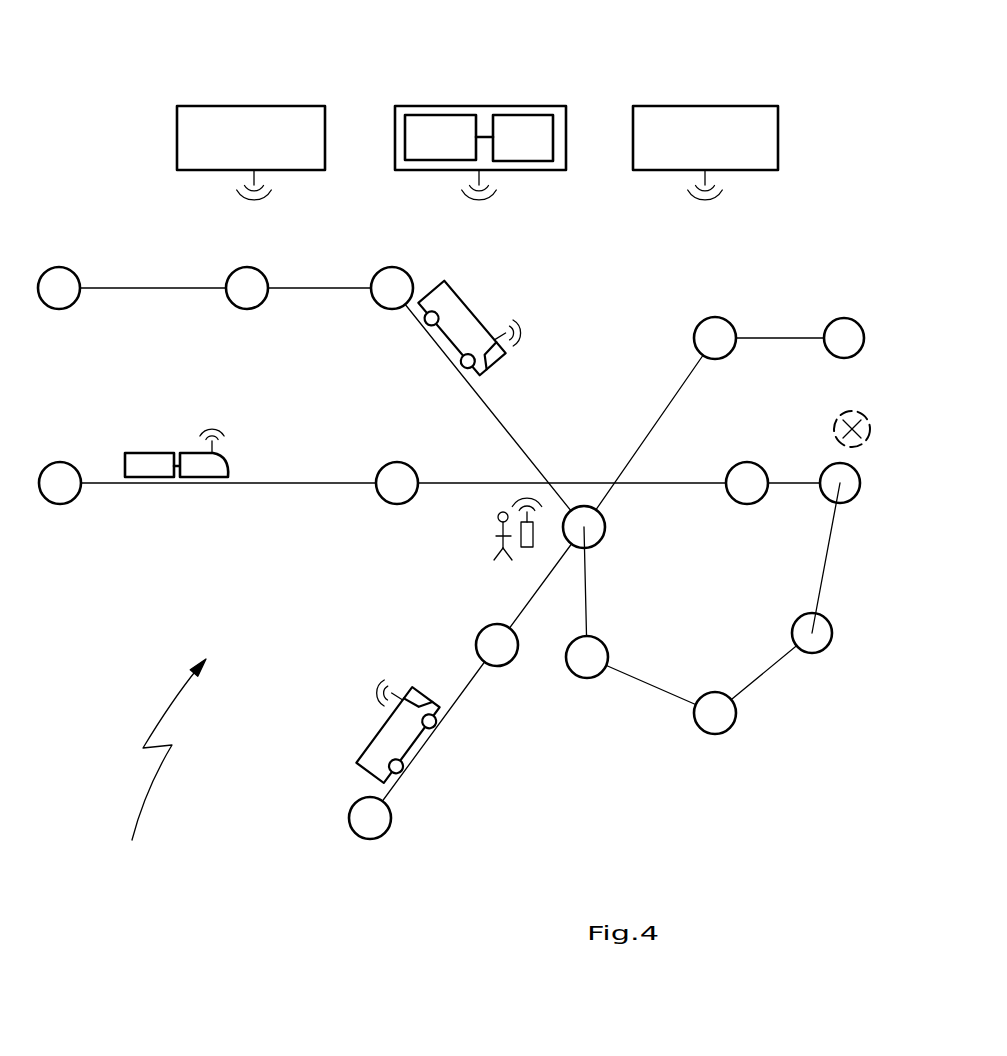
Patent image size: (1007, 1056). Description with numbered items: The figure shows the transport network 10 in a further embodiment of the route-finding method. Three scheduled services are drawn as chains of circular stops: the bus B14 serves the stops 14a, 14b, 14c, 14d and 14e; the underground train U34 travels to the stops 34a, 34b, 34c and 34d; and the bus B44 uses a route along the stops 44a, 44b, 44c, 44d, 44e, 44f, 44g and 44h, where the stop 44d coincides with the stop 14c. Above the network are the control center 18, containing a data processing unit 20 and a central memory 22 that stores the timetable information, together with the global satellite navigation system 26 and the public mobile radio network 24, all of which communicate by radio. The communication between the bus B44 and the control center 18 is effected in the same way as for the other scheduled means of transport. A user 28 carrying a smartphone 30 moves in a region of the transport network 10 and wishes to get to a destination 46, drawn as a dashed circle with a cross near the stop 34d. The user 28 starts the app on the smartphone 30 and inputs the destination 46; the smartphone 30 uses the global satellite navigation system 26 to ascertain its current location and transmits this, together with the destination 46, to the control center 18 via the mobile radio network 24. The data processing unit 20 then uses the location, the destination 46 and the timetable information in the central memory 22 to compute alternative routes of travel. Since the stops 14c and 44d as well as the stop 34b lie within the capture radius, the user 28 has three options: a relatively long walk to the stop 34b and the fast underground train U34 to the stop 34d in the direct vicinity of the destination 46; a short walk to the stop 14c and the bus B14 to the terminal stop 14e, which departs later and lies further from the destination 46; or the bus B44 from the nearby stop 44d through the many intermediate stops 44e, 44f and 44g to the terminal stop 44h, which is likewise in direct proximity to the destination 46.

The transport network 10 is at (165, 763).
The stop 14a is at (394, 824).
The stop 14b is at (508, 663).
The stop 14c is at (604, 535).
The stop 14d is at (713, 317).
The stop 14e is at (840, 318).
The control center 18 is at (477, 113).
The data processing unit 20 is at (413, 142).
The central memory 22 is at (526, 123).
The public mobile radio network 24 is at (705, 117).
The global satellite navigation system 26 is at (254, 118).
The user 28 is at (497, 535).
The smartphone 30 is at (527, 550).
The stop 34a is at (53, 468).
The underground railway stop 34b is at (388, 463).
The stop 34c is at (745, 462).
The stop 34d is at (828, 465).
The stop 44a is at (53, 268).
The stop 44b is at (253, 268).
The stop 44c is at (388, 267).
The stop 44d is at (604, 512).
The intermediate stop 44e is at (606, 638).
The intermediate stop 44f is at (713, 692).
The intermediate stop 44g is at (793, 628).
The terminal stop 44h is at (826, 502).
The destination 46 is at (843, 413).
The bus B14 is at (375, 745).
The bus B44 is at (457, 310).
The underground train U34 is at (148, 457).